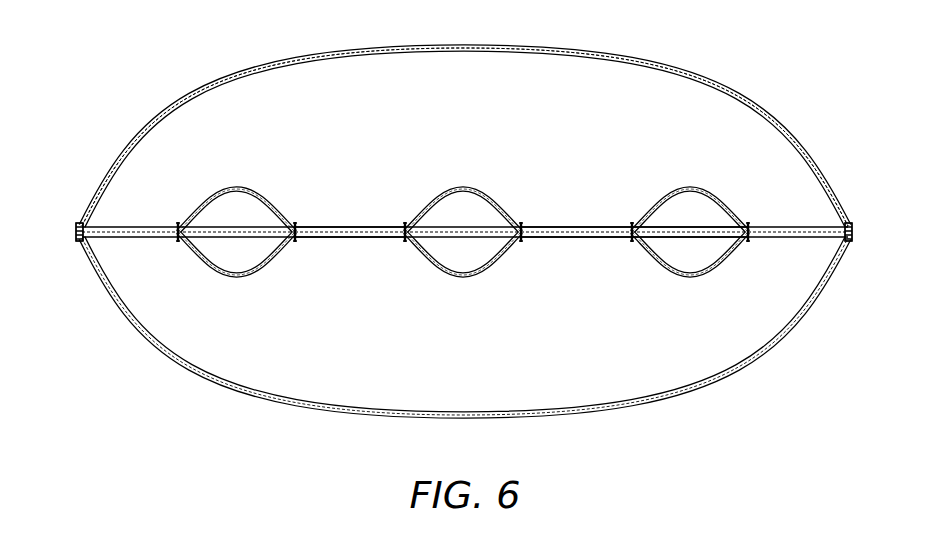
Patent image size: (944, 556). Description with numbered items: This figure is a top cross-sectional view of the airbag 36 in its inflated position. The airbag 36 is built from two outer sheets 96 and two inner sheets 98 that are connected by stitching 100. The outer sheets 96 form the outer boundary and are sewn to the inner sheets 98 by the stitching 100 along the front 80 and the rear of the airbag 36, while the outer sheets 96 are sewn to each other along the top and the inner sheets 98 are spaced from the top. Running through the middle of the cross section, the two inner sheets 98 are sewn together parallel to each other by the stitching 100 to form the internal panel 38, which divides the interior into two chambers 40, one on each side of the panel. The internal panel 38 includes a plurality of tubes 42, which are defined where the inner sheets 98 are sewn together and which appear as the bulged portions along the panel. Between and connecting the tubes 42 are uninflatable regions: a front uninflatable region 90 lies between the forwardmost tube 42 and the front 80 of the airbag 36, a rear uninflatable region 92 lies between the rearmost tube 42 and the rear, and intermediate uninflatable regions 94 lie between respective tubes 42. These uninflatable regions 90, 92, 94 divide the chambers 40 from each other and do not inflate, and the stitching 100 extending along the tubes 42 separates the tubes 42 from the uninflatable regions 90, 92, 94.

The airbag 36 is at (461, 229).
The internal panel 38 is at (598, 220).
The chambers 40 is at (457, 115).
The tubes 42 is at (246, 188).
The front 80 is at (98, 201).
The front uninflatable region 90 is at (144, 226).
The rear uninflatable region 92 is at (789, 237).
The intermediate uninflatable regions 94 is at (336, 226).
The outer sheets 96 is at (251, 66).
The inner sheets 98 is at (375, 226).
The stitching 100 is at (78, 242).